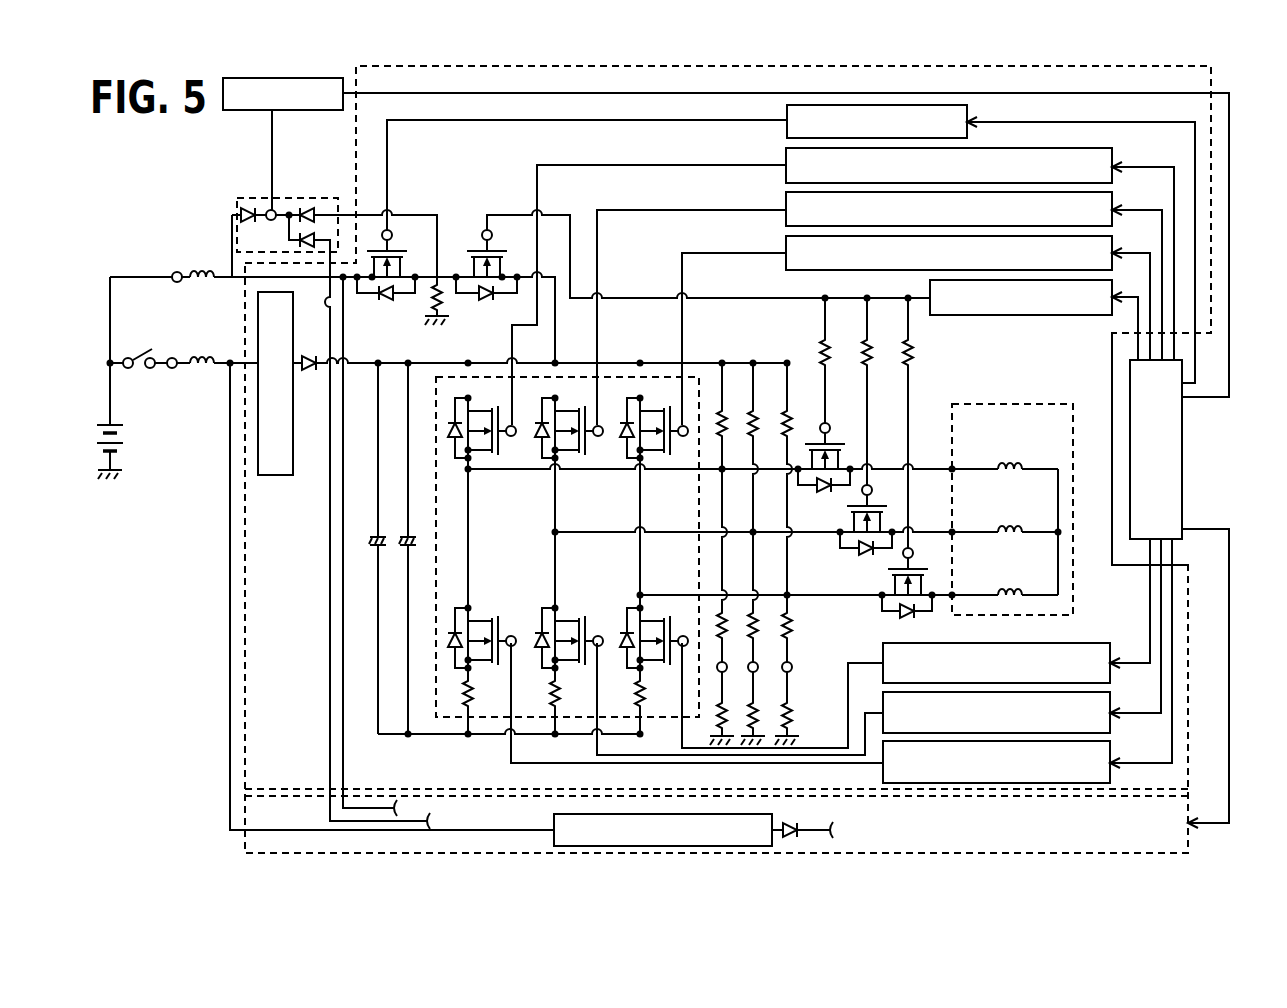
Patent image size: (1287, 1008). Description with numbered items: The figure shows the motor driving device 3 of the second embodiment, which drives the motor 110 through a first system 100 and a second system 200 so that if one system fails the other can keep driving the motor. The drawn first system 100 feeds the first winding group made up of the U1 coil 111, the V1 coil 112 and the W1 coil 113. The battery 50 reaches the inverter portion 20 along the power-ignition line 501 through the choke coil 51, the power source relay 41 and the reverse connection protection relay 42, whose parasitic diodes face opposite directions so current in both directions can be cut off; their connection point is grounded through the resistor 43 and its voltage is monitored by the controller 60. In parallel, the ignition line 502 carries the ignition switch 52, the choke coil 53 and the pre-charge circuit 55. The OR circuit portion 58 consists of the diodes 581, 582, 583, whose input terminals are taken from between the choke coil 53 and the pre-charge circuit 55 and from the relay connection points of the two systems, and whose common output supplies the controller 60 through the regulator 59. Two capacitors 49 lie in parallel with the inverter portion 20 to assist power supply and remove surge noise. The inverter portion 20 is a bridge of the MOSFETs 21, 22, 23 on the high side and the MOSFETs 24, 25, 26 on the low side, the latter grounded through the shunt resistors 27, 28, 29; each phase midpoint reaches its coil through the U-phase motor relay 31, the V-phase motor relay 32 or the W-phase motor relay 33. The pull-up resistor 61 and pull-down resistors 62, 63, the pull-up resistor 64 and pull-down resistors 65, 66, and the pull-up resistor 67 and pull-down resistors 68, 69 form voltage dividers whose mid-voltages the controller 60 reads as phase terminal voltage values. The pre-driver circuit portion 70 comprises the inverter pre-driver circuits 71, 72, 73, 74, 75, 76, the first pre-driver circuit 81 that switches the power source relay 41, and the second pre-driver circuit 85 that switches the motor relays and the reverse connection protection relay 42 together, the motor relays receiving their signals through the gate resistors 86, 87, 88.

The motor driving device 3 is at (189, 789).
The inverter portion 20 is at (442, 582).
The MOSFET 21 is at (478, 412).
The MOSFET 22 is at (565, 412).
The MOSFET 23 is at (650, 412).
The MOSFET 24 is at (478, 622).
The MOSFET 25 is at (565, 622).
The MOSFET 26 is at (651, 622).
The shunt resistor 27 is at (473, 681).
The shunt resistor 28 is at (560, 681).
The shunt resistor 29 is at (645, 681).
The U-phase motor relay 31 is at (838, 456).
The V-phase motor relay 32 is at (880, 518).
The W-phase motor relay 33 is at (920, 581).
The power source relay 41 is at (402, 269).
The reverse connection protection relay 42 is at (505, 269).
The resistor 43 is at (430, 297).
The capacitors 49 is at (374, 536).
The battery 50 is at (118, 418).
The choke coil 51 is at (199, 270).
The ignition switch 52 is at (152, 370).
The choke coil 53 is at (204, 372).
The pre-charge circuit 55 is at (272, 477).
The OR circuit portion 58 is at (236, 200).
The regulator 59 is at (234, 111).
The controller 60 is at (1184, 511).
The pull-up resistor 61 is at (727, 423).
The pull-down resistor 62 is at (727, 630).
The pull-down resistor 63 is at (727, 712).
The pull-up resistor 64 is at (759, 423).
The pull-down resistor 65 is at (759, 630).
The pull-down resistor 66 is at (759, 712).
The pull-up resistor 67 is at (794, 423).
The pull-down resistor 68 is at (794, 630).
The pull-down resistor 69 is at (791, 716).
The pre-driver circuit portion 70 is at (1038, 328).
The U-phase high-potential-side inverter pre-driver circuit 71 is at (1113, 150).
The V-phase high-potential-side inverter pre-driver circuit 72 is at (1113, 194).
The W-phase high-potential-side inverter pre-driver circuit 73 is at (1113, 238).
The W-phase low-potential-side inverter pre-driver circuit 74 is at (1110, 650).
The V-phase low-potential-side inverter pre-driver circuit 75 is at (1110, 700).
The U-phase low-potential-side inverter pre-driver circuit 76 is at (1110, 750).
The first pre-driver circuit 81 is at (968, 112).
The second pre-driver circuit 85 is at (1090, 316).
The gate resistor 86 is at (820, 346).
The gate resistor 87 is at (862, 346).
The gate resistor 88 is at (903, 346).
The first system 100 is at (1213, 85).
The motor 110 is at (958, 400).
The U1 coil 111 is at (1011, 463).
The V1 coil 112 is at (1011, 526).
The W1 coil 113 is at (1011, 589).
The second system 200 is at (1190, 840).
The PIG line 501 is at (131, 275).
The IG line 502 is at (152, 353).
The diode 581 is at (246, 210).
The diode 582 is at (306, 210).
The diode 583 is at (320, 236).